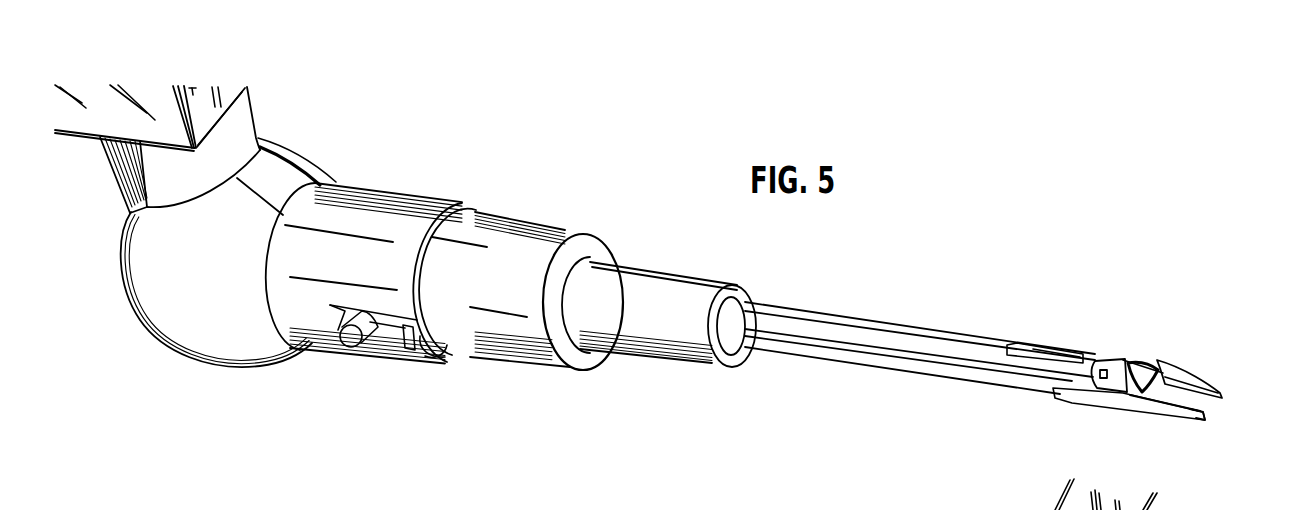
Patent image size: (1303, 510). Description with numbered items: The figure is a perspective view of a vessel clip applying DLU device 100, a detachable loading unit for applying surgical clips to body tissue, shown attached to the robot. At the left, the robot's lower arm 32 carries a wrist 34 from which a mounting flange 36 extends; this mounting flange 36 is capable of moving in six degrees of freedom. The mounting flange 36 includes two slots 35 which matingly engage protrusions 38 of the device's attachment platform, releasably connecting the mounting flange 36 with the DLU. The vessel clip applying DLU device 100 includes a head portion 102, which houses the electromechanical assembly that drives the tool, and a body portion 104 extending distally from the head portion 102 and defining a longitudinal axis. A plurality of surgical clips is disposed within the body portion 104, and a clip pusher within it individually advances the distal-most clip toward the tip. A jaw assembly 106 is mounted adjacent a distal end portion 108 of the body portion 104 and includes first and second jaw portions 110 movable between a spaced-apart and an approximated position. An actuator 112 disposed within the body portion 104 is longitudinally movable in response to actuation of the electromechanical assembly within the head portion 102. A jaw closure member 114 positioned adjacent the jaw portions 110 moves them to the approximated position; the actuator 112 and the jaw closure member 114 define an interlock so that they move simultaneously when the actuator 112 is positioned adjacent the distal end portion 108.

The lower arm 32 is at (227, 95).
The wrist 34 is at (317, 168).
The mounting flange 36 is at (410, 200).
The protrusions 38 is at (350, 338).
The slots 35 is at (397, 323).
The head portion 102 is at (500, 225).
The vessel clip applying DLU device 100 is at (636, 231).
The body portion 104 is at (800, 313).
The actuator 112 is at (1045, 352).
The distal end portion 108 is at (1143, 360).
The jaw closure member 114 is at (1162, 367).
The jaw assembly 106 is at (1236, 371).
The jaw portions 110 is at (1202, 420).